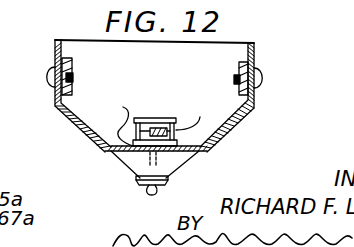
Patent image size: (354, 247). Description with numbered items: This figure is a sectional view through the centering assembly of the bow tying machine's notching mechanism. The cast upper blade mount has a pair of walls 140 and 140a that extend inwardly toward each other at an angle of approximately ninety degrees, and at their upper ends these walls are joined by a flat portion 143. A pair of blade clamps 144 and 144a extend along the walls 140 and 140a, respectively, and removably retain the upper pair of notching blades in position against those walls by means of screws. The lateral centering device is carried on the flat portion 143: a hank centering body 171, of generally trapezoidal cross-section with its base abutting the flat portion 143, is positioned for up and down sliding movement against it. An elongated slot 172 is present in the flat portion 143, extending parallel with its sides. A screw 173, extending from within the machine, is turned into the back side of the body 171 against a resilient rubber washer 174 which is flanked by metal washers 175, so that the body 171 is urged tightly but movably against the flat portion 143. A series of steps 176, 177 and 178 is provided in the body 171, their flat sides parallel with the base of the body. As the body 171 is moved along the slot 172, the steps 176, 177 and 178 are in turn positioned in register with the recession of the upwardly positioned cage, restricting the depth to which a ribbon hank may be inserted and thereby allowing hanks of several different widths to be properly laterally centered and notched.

The wall 140 is at (92, 138).
The blade clamp 144 is at (78, 127).
The blade clamp 144a is at (243, 118).
The wall 140a is at (218, 129).
The flat portion 143 is at (186, 155).
The screw 173 is at (159, 118).
The resilient rubber washer 174 is at (198, 113).
The metal washers 175 is at (112, 121).
The elongated slot 172 is at (123, 161).
The hank centering body 171 is at (136, 170).
The step 176 is at (168, 180).
The step 177 is at (147, 187).
The step 178 is at (155, 192).